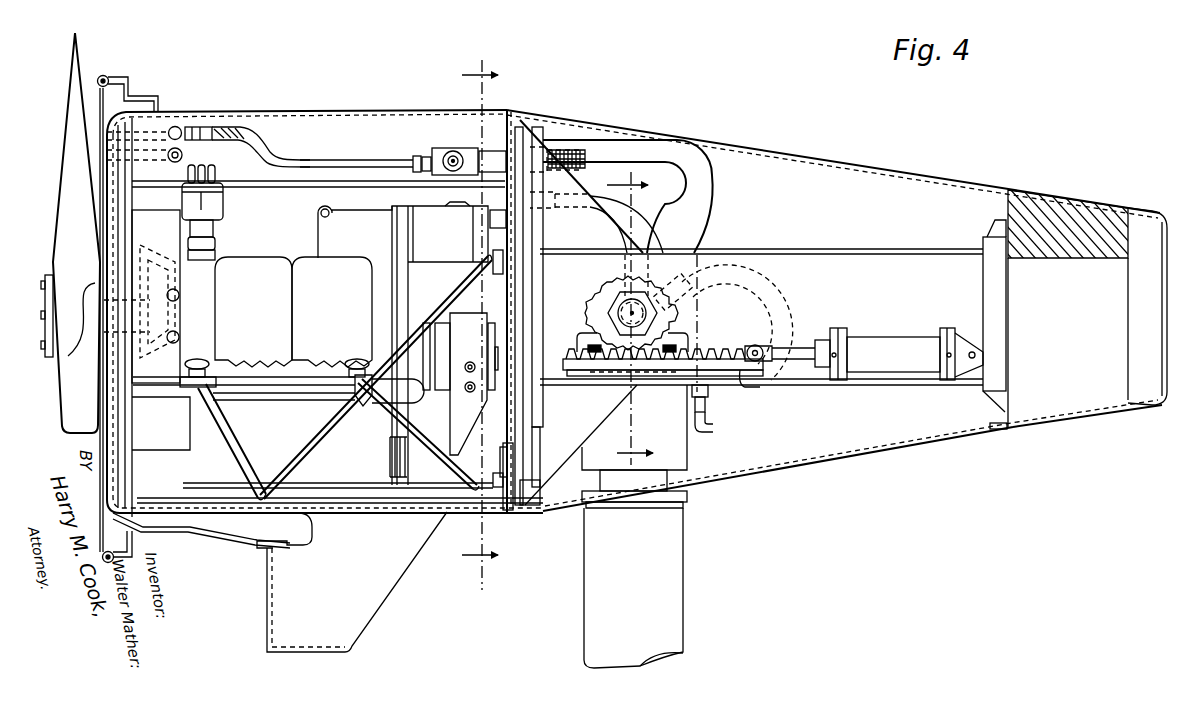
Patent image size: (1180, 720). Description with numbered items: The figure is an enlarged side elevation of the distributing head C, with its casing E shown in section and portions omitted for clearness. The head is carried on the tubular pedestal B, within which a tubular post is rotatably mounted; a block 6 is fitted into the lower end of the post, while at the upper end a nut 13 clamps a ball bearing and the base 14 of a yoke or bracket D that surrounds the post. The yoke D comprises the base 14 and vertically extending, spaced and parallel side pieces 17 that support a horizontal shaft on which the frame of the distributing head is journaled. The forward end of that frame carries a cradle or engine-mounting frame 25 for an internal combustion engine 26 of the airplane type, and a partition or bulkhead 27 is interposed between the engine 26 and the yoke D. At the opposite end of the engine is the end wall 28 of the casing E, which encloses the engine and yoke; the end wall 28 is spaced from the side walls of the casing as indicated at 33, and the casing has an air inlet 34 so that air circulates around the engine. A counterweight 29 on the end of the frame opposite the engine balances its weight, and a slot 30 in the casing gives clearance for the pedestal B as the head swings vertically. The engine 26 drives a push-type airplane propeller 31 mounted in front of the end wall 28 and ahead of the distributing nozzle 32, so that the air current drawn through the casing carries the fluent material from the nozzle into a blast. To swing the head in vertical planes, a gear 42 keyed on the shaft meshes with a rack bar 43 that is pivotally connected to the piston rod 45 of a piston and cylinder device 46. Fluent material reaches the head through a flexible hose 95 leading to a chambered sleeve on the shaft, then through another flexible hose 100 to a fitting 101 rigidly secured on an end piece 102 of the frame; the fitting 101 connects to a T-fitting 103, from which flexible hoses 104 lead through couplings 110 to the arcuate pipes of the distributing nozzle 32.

The airplane propeller 31 is at (57, 226).
The distributing nozzle 32 is at (107, 76).
The space between end wall and side walls 33 is at (140, 96).
The distributing head C is at (378, 110).
The coupling 110 is at (182, 127).
The end wall 28 is at (107, 160).
The flexible hoses 104 is at (315, 165).
The T-fitting 103 is at (456, 150).
The internal combustion engine 26 is at (270, 262).
The cradle or engine-mounting frame 25 is at (250, 478).
The air inlet 34 is at (267, 610).
The nut 13 is at (480, 321).
The partition or bulkhead 27 is at (511, 110).
The end piece 102 is at (520, 450).
The fitting 101 is at (545, 140).
The casing E is at (618, 118).
The block 6 is at (636, 318).
The flexible hose 100 is at (691, 219).
The gear 42 is at (590, 316).
The rack bar 43 is at (735, 394).
The flexible hose 95 is at (787, 308).
The piston rod 45 is at (800, 350).
The piston and cylinder device 46 is at (887, 342).
The counterweight 29 is at (1040, 202).
The slot 30 is at (840, 463).
The yoke or bracket D is at (676, 462).
The base of yoke 14 is at (672, 484).
The side pieces 17 is at (592, 470).
The pedestal B is at (690, 582).